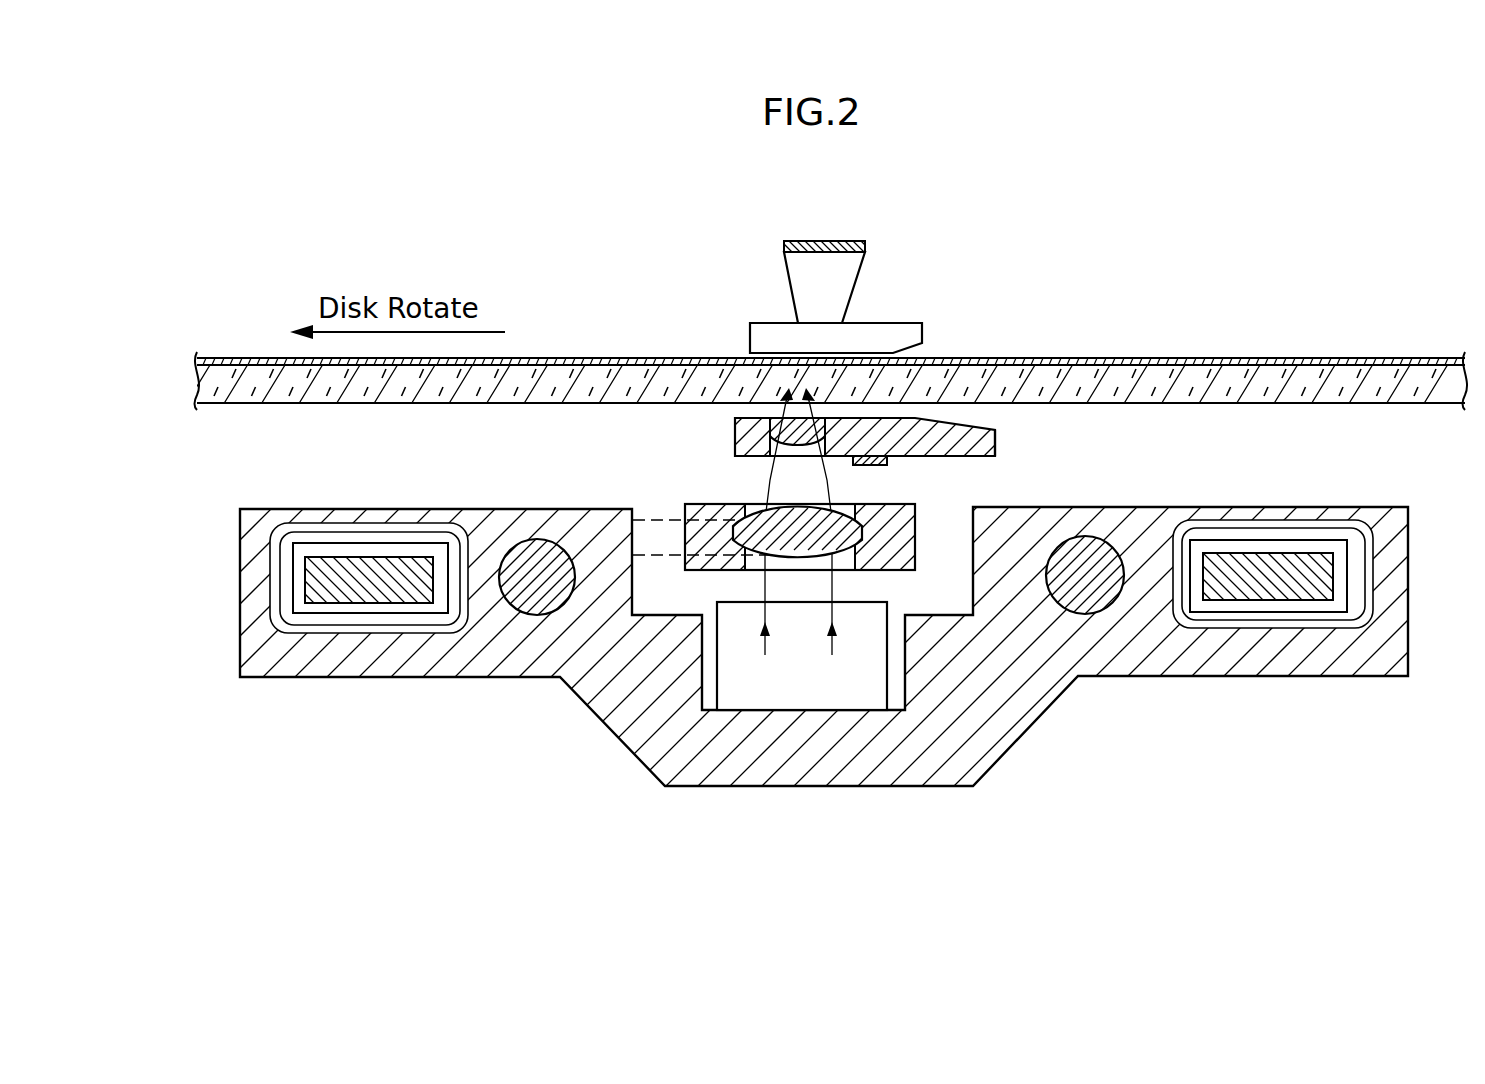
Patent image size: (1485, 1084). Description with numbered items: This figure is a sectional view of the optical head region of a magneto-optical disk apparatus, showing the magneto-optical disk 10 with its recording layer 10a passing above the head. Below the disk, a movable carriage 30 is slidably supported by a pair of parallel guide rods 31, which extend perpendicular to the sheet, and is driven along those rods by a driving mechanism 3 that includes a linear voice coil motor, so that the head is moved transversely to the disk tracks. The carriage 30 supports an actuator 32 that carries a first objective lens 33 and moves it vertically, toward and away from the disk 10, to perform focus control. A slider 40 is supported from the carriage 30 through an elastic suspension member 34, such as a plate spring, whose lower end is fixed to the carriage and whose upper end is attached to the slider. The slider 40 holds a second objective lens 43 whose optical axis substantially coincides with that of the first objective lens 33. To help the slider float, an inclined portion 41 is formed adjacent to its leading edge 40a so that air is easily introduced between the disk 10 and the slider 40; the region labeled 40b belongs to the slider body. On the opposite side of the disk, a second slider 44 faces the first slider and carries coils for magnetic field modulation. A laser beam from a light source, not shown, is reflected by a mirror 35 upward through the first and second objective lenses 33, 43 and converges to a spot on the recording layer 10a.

The driving mechanism 3 is at (1343, 527).
The magneto-optical disk 10 is at (827, 339).
The recording layer 10a is at (1290, 372).
The carriage 30 is at (1140, 665).
The guide rods 31 is at (537, 615).
The actuator 32 is at (708, 505).
The first objective lens 33 is at (797, 512).
The suspension member 34 is at (867, 457).
The mirror 35 is at (805, 682).
The slider 40 is at (825, 375).
The leading edge 40a is at (995, 445).
The block front portion 40b is at (735, 418).
The inclined portion 41 is at (977, 430).
The second objective lens 43 is at (768, 440).
The second slider 44 is at (773, 330).